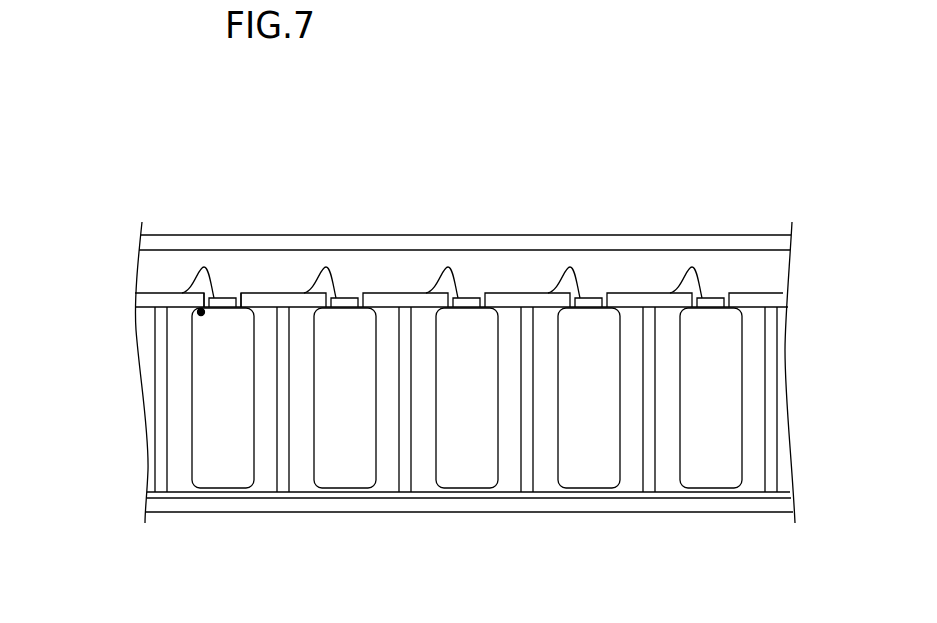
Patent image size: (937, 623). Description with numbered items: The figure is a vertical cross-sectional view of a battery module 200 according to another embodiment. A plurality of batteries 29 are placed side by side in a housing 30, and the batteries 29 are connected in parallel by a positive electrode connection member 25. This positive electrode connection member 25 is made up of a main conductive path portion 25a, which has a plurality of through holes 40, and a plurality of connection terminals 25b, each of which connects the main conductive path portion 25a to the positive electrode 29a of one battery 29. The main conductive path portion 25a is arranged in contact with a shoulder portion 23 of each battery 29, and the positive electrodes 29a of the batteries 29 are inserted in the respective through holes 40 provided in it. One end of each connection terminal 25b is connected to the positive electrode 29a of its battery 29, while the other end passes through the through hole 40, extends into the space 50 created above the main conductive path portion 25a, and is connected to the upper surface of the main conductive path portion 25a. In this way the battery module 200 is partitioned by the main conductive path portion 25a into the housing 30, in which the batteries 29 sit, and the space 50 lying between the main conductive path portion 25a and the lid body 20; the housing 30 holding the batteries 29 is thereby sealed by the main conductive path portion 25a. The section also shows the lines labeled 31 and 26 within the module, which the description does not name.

The battery module 200 is at (700, 140).
The lid body 20 is at (613, 243).
The space 50 is at (668, 262).
The positive electrode connection member 25 is at (461, 211).
The main conductive path portion 25a is at (386, 293).
The connection terminal 25b is at (447, 266).
The positive electrode 29a is at (472, 297).
The through hole 40 is at (238, 290).
The battery 29 is at (732, 368).
The partition wall 31 is at (775, 412).
The vibration plate 26 is at (790, 492).
The housing 30 is at (350, 512).
The shoulder portion 23 is at (200, 313).